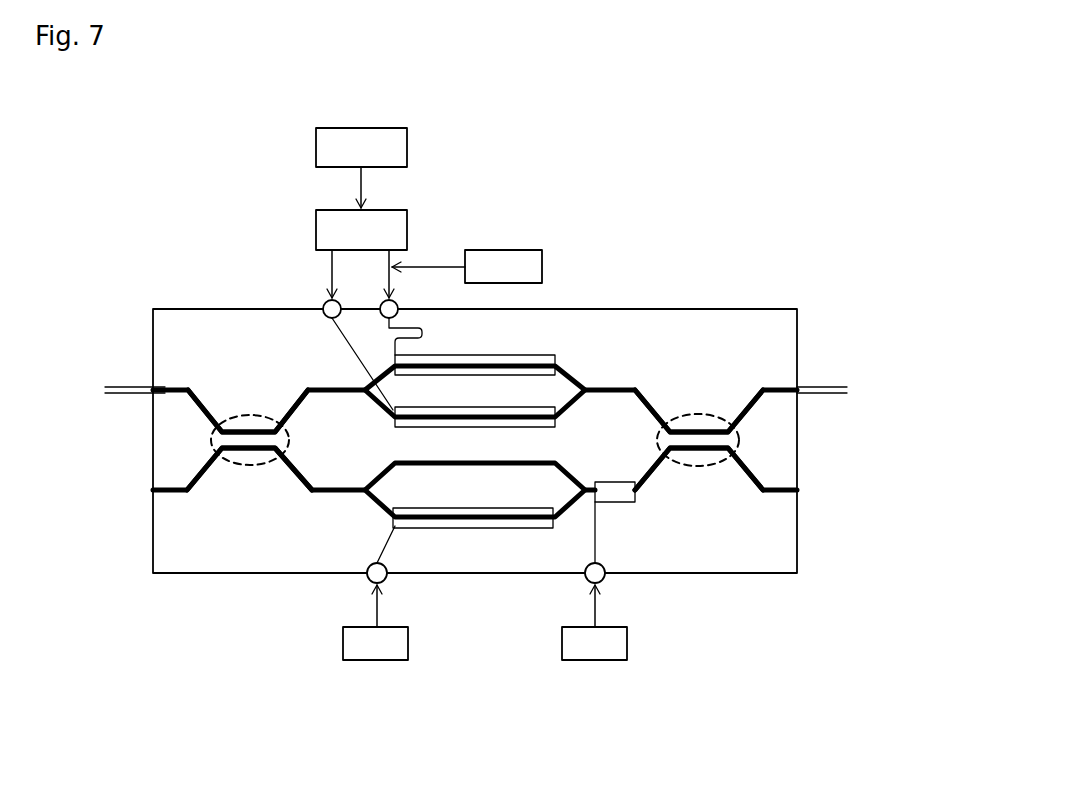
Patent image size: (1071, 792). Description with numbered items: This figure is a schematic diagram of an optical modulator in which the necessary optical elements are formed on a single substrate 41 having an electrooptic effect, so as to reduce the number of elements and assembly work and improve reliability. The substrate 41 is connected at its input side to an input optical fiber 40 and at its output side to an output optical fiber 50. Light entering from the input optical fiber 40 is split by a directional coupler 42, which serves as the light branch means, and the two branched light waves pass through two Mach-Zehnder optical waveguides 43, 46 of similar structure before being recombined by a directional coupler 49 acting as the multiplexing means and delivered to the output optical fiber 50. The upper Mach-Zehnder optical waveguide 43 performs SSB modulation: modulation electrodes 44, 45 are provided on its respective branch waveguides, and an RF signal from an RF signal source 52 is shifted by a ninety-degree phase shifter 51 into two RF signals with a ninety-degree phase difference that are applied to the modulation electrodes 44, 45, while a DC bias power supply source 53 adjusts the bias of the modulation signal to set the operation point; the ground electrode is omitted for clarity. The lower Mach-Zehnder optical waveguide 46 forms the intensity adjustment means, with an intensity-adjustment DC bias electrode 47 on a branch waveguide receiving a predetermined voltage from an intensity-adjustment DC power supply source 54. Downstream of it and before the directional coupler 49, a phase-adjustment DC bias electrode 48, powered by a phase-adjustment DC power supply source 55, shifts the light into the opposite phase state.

The input optical fiber 40 is at (138, 393).
The substrate 41 is at (752, 309).
The directional coupler 42 is at (252, 467).
The Mach-Zehnder optical waveguide 43 is at (575, 377).
The modulation electrode 44 is at (522, 353).
The modulation electrode 45 is at (557, 407).
The Mach-Zehnder optical waveguide 46 is at (367, 507).
The intensity-adjustment DC bias electrode 47 is at (473, 528).
The phase-adjustment DC bias electrode 48 is at (617, 502).
The directional coupler 49 is at (698, 467).
The output optical fiber 50 is at (818, 397).
The 90° phase shifter 51 is at (407, 230).
The RF signal source 52 is at (407, 147).
The DC bias power supply source 53 is at (503, 267).
The intensity-adjustment DC power supply source 54 is at (378, 645).
The phase-adjustment DC power supply source 55 is at (595, 647).